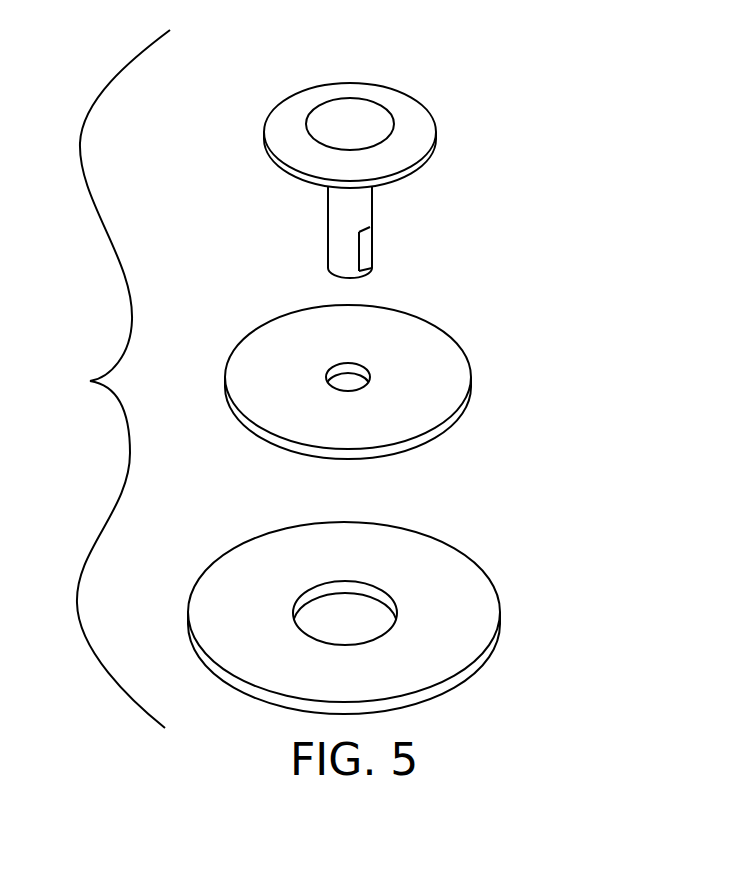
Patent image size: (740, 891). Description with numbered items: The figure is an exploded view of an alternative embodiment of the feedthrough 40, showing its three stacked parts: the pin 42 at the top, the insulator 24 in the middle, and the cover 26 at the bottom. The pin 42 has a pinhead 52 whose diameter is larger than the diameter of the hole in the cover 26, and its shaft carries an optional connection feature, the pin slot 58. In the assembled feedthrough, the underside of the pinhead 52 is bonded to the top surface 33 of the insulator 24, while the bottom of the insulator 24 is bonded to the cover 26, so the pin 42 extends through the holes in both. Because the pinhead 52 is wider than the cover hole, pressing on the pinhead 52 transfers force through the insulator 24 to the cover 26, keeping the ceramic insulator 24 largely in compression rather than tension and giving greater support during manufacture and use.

The insulator 24 is at (376, 359).
The cover 26 is at (468, 680).
The top surface of insulator 33 is at (275, 360).
The feedthrough 40 is at (113, 379).
The pin 42 is at (517, 95).
The pinhead 52 is at (403, 95).
The pin slot 58 is at (372, 248).